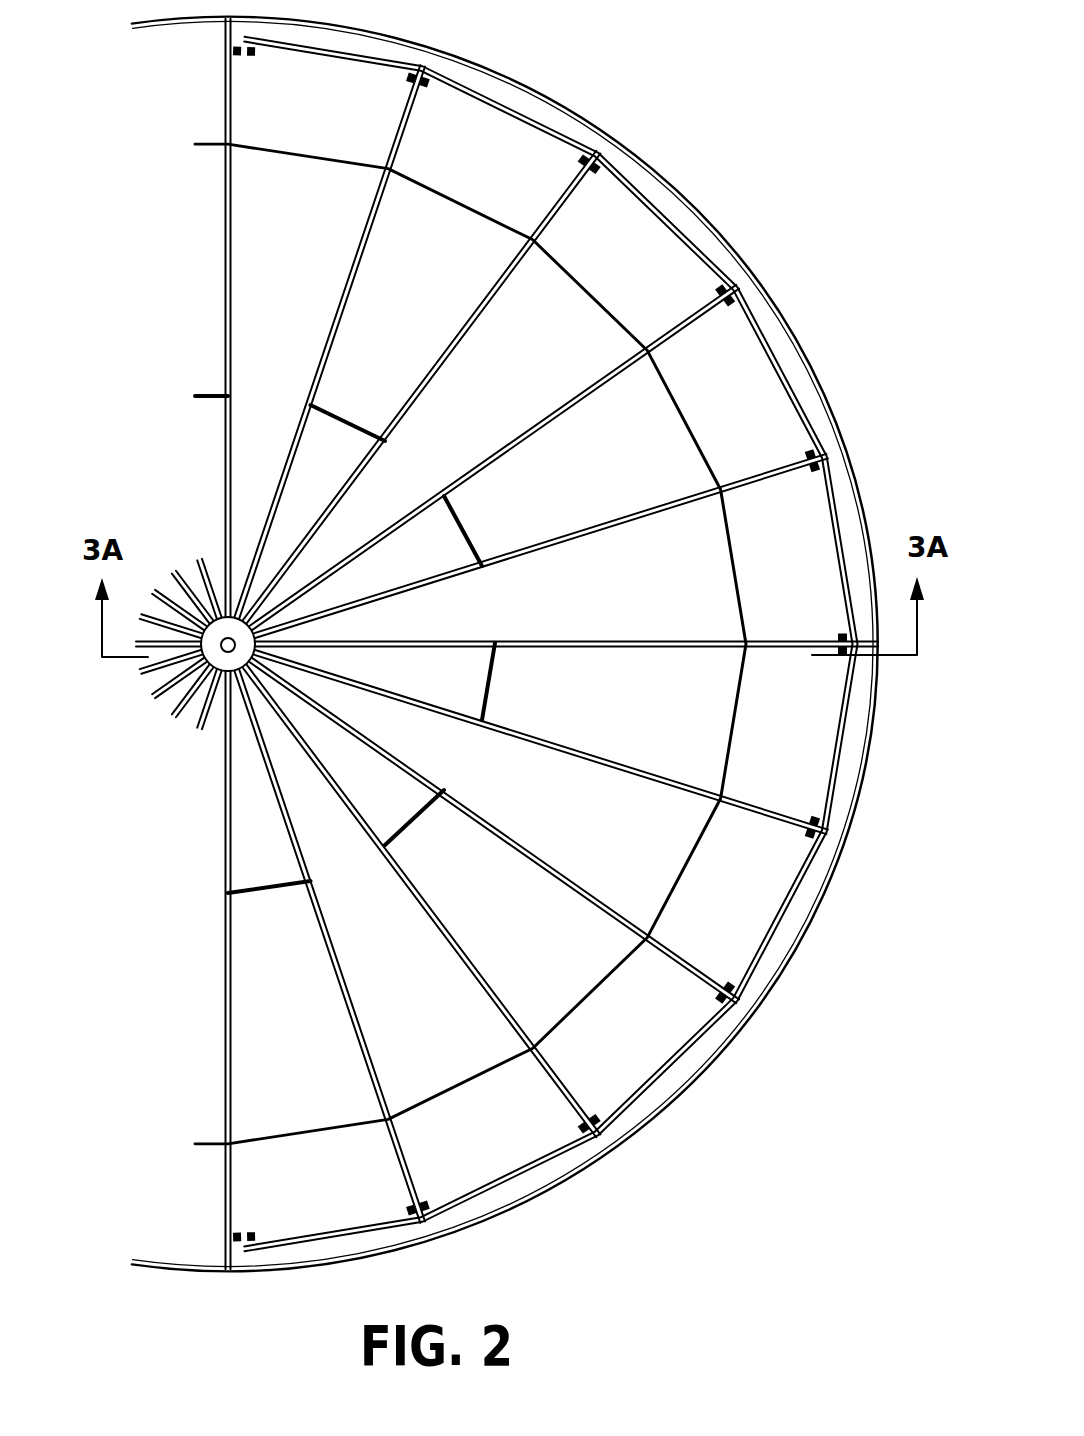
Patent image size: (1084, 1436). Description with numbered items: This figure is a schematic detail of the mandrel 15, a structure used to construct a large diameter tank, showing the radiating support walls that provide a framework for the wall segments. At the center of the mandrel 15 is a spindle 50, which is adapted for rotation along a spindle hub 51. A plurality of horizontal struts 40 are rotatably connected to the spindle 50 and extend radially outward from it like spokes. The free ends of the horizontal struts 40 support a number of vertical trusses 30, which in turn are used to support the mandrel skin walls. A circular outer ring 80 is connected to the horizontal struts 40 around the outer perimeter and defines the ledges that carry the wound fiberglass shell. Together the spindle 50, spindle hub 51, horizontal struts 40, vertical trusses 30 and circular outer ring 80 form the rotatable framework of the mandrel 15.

The mandrel 15 is at (168, 448).
The vertical truss 30 is at (737, 265).
The horizontal strut 40 is at (690, 795).
The spindle 50 is at (233, 603).
The spindle hub 51 is at (228, 652).
The circular outer ring 80 is at (652, 182).